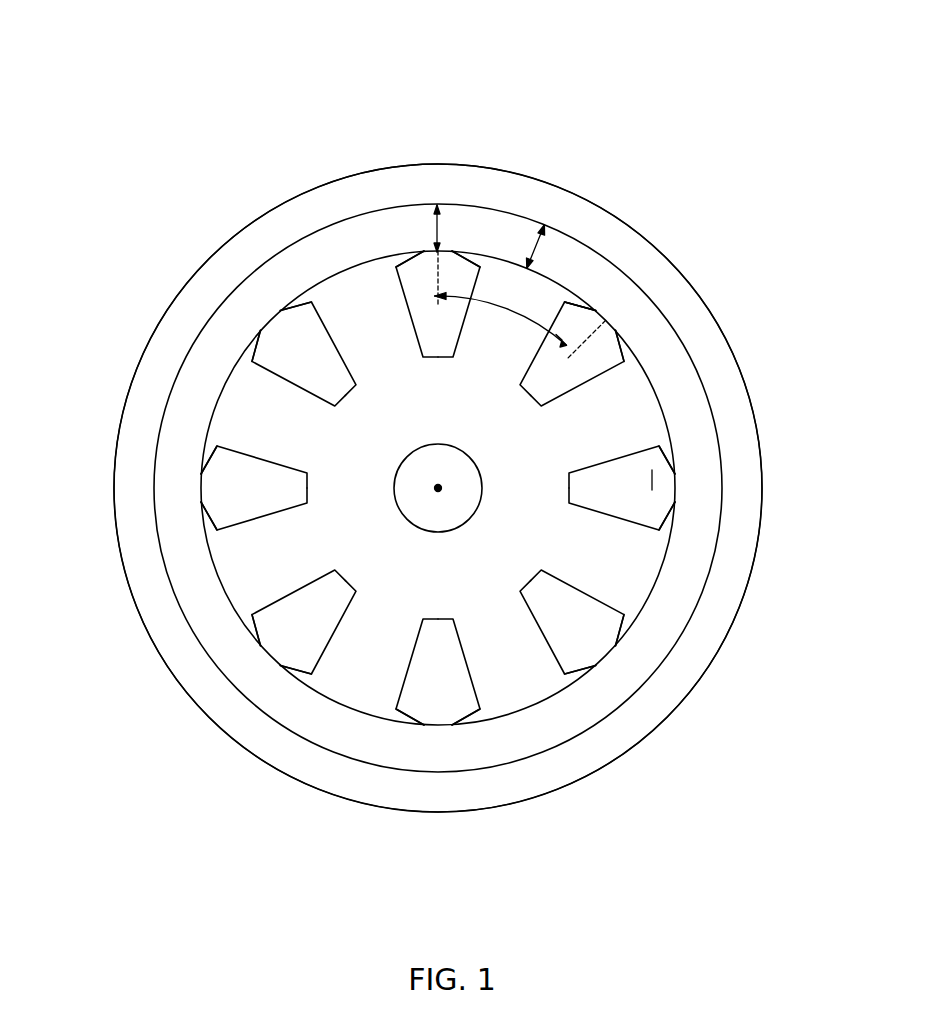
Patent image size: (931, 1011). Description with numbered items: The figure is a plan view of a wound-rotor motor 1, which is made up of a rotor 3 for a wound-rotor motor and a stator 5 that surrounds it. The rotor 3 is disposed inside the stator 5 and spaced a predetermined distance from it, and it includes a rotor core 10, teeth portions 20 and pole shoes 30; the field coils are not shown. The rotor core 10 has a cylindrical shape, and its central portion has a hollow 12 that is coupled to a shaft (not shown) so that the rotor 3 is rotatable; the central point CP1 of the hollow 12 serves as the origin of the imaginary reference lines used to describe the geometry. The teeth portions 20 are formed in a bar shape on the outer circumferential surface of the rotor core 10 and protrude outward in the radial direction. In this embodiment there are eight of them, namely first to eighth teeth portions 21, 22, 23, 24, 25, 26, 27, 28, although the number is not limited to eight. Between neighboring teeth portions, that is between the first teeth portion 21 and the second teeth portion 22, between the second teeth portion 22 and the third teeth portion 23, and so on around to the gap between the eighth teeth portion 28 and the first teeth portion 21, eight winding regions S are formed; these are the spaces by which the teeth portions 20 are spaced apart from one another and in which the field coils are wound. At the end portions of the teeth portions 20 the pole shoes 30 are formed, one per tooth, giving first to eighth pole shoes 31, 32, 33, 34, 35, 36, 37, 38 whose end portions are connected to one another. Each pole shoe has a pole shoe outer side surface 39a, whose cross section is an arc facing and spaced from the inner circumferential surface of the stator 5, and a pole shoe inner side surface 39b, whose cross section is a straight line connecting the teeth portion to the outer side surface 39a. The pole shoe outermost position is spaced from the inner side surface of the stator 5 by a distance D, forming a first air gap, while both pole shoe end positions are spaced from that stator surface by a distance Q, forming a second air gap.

The wound-rotor motor 1 is at (327, 30).
The rotor 3 is at (222, 282).
The stator 5 is at (417, 178).
The rotor core 10 is at (377, 565).
The hollow 12 is at (438, 461).
The central point CP1 is at (438, 488).
The teeth portions 20 is at (437, 519).
The first teeth portion 21 is at (527, 297).
The second teeth portion 22 is at (635, 417).
The third teeth portion 23 is at (630, 577).
The fourth teeth portion 24 is at (512, 687).
The fifth teeth portion 25 is at (350, 680).
The sixth teeth portion 26 is at (240, 562).
The seventh teeth portion 27 is at (247, 400).
The eighth teeth portion 28 is at (367, 290).
The pole shoes 30 is at (435, 525).
The first pole shoe 31 is at (515, 275).
The second pole shoe 32 is at (643, 390).
The third pole shoe 33 is at (652, 563).
The fourth pole shoe 34 is at (537, 692).
The fifth pole shoe 35 is at (363, 702).
The sixth pole shoe 36 is at (233, 587).
The seventh pole shoe 37 is at (223, 415).
The eighth pole shoe 38 is at (340, 287).
The pole shoe outer side surface 39a is at (498, 303).
The pole shoe inner side surface 39b is at (590, 297).
The distance D is at (532, 247).
The distance Q is at (447, 228).
The winding region S is at (652, 480).